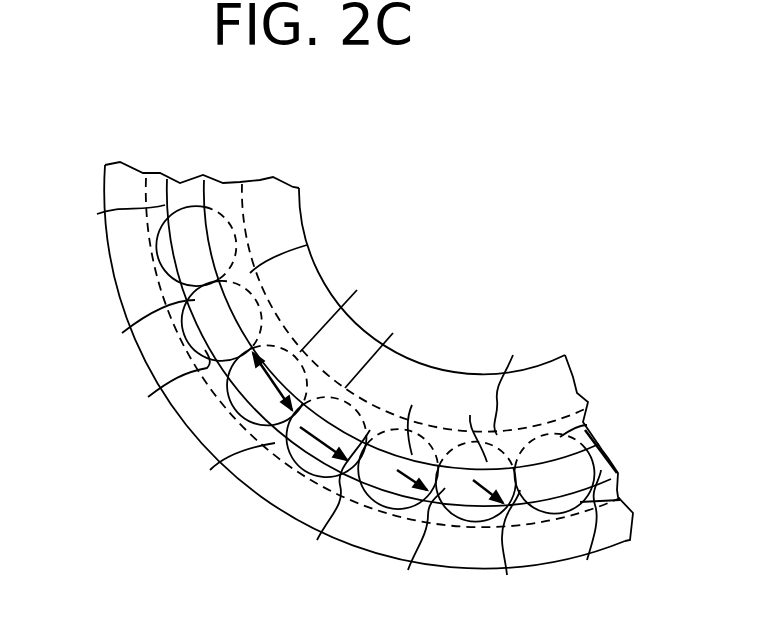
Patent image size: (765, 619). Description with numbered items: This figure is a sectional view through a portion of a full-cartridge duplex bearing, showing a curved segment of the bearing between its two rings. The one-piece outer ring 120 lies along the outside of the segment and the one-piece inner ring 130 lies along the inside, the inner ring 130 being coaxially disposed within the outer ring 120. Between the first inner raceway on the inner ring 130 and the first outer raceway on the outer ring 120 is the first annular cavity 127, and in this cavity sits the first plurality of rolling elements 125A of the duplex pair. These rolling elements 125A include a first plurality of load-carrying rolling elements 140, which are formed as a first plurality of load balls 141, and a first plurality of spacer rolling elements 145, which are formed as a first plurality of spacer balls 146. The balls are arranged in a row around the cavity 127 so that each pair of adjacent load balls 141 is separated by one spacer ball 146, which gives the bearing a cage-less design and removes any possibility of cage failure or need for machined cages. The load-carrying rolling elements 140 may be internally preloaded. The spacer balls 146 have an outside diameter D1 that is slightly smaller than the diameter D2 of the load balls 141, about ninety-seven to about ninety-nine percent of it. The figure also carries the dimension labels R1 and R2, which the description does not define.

The outer ring 120 is at (121, 170).
The first plurality of rolling elements 125A is at (181, 158).
The first annular cavity 127 is at (303, 247).
The inner ring 130 is at (256, 185).
The first plurality of load-carrying rolling elements 140 is at (572, 437).
The first plurality of load balls 141 is at (346, 453).
The first plurality of spacer rolling elements 145 is at (515, 380).
The first plurality of spacer balls 146 is at (618, 473).
The outside diameter of spacer balls D1 is at (390, 353).
The diameter of load bearing balls D2 is at (346, 305).
The radius R1 is at (472, 427).
The radius R2 is at (416, 418).